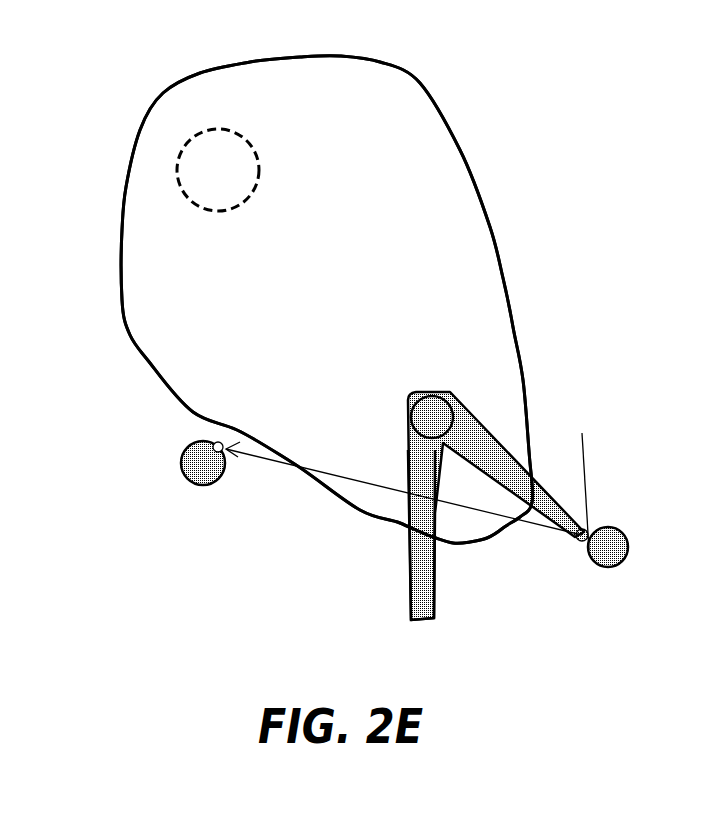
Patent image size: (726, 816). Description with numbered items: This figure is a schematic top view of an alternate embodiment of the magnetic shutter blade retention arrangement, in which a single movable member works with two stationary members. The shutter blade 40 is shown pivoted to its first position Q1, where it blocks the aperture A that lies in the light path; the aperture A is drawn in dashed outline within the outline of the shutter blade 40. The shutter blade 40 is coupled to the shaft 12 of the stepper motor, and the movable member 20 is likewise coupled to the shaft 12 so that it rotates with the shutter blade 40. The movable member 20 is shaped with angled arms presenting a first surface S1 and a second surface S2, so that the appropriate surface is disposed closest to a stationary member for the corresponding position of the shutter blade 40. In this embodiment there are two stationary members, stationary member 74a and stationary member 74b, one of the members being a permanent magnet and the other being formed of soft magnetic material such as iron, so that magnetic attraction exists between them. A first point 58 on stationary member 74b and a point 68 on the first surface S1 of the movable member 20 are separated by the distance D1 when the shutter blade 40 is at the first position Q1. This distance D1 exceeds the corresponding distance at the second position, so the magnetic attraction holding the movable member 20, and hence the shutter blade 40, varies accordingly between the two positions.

The first position Q1 is at (183, 52).
The aperture A is at (217, 127).
The shutter blade 40 is at (196, 318).
The shaft 12 is at (413, 393).
The movable member 20 is at (410, 458).
The first surface S1 is at (574, 474).
The second surface S2 is at (410, 612).
The distance D1 is at (375, 487).
The first point 58 is at (215, 450).
The stationary member 74b is at (200, 488).
The stationary member 74a is at (585, 545).
The point 68 is at (605, 567).